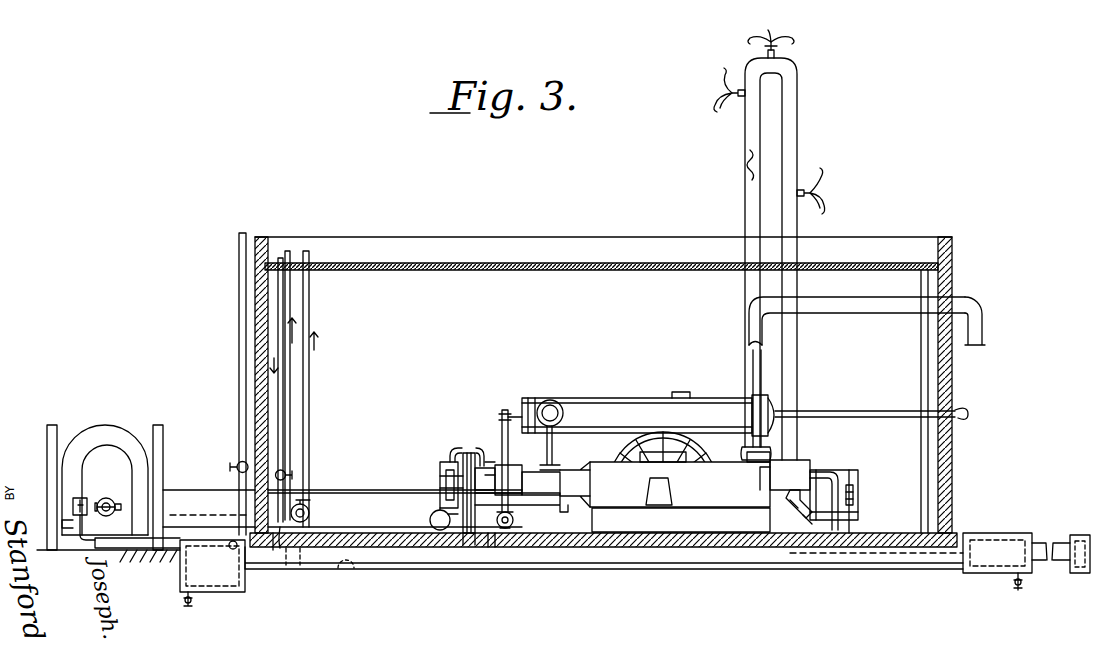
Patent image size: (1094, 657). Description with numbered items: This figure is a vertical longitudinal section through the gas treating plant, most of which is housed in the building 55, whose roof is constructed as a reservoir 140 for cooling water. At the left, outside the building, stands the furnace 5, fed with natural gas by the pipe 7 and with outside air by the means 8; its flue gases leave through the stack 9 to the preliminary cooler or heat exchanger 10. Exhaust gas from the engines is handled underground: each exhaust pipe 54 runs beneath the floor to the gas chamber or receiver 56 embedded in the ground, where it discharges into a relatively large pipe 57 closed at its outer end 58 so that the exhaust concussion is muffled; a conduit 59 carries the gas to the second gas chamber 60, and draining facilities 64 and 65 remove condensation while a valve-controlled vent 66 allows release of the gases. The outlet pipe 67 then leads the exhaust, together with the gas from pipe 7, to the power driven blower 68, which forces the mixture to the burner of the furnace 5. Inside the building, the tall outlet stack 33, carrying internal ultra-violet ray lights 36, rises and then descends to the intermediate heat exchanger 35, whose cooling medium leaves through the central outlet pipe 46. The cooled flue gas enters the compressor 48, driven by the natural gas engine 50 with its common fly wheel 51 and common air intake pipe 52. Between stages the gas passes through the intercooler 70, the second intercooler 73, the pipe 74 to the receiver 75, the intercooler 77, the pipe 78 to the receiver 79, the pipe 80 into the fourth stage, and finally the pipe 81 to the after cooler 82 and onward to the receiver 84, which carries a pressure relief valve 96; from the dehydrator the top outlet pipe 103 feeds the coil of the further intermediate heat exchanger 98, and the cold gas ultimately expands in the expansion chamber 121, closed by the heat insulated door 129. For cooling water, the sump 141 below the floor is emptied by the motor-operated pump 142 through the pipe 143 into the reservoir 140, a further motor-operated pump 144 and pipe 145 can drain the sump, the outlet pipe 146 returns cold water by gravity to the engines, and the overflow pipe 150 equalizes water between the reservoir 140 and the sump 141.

The furnace 5 is at (109, 430).
The pipe 7 is at (62, 524).
The means for supplying air 8 is at (78, 500).
The stack 9 is at (197, 505).
The preliminary cooler or heat exchanger 10 is at (378, 497).
The outlet stack 33 is at (790, 120).
The intermediate heat exchanger 35 is at (688, 405).
The internal ultra-violet ray lights 36 is at (735, 100).
The central outlet pipe 46 is at (835, 411).
The compressor 48 is at (567, 468).
The two-cycle internal combustion natural gas engine 50 is at (804, 465).
The fly wheel 51 is at (642, 445).
The common air intake pipe 52 is at (862, 313).
The exhaust pipe 54 is at (804, 528).
The building 55 is at (955, 284).
The gas chamber or receiver 56 is at (992, 533).
The relatively large pipe 57 is at (1052, 543).
The closed outer end 58 is at (1078, 575).
The conduit 59 is at (694, 570).
The second gas chamber 60 is at (212, 566).
The draining facilities 64 is at (1014, 587).
The draining facilities 65 is at (194, 606).
The valve-controlled vent 66 is at (238, 438).
The outlet pipe 67 is at (146, 549).
The power driven blower 68 is at (107, 498).
The intercooler 70 is at (557, 400).
The second intercooler 73 is at (552, 505).
The pipe 74 is at (452, 450).
The receiver 75 is at (468, 450).
The intercooler 77 is at (430, 518).
The pipe 78 is at (440, 481).
The receiver 79 is at (462, 478).
The pipe 80 is at (478, 462).
The pipe 81 is at (512, 507).
The after cooler 82 is at (492, 548).
The receiver 84 is at (498, 420).
The pressure relief valve 96 is at (507, 410).
The intermediate heat exchanger 98 is at (602, 398).
The top outlet pipe 103 is at (531, 448).
The expansion chamber 121 is at (832, 478).
The heat insulated door 129 is at (856, 503).
The reservoir 140 is at (555, 248).
The collecting reservoir or sump 141 is at (348, 572).
The motor-operated pump 142 is at (304, 508).
The pipe 143 is at (310, 432).
The motor-operated pump 144 is at (273, 552).
The pipe 145 is at (287, 385).
The outlet pipe 146 is at (920, 452).
The overflow pipe 150 is at (286, 411).